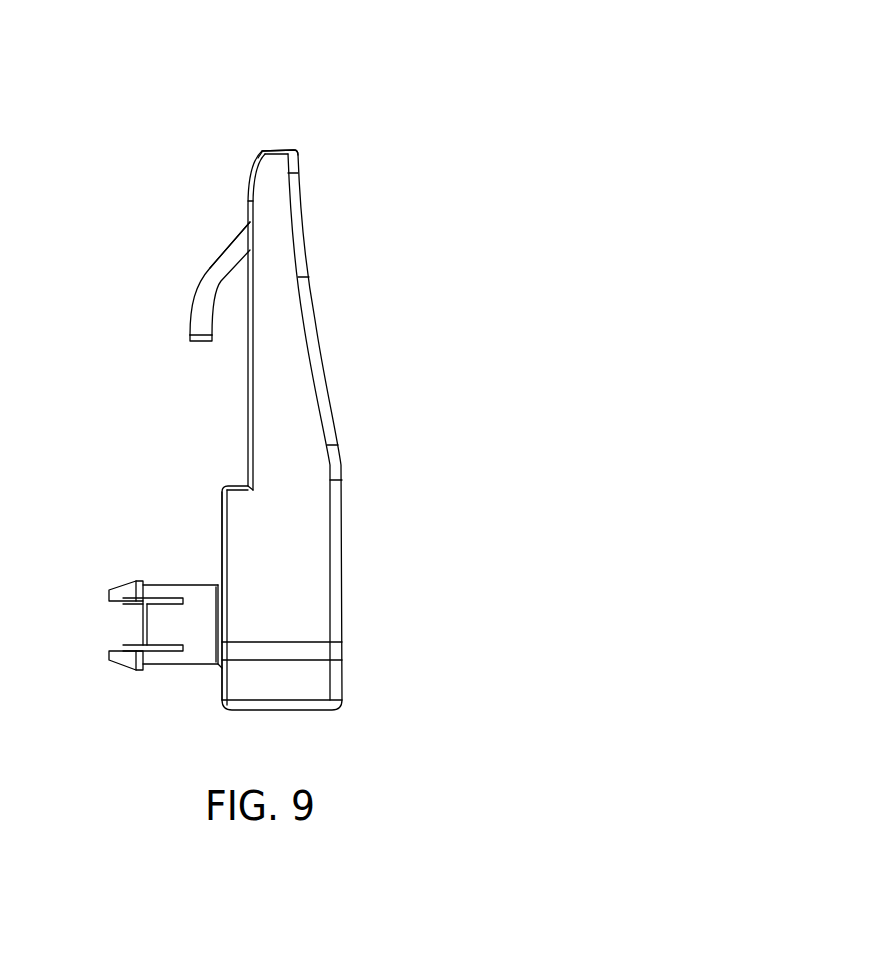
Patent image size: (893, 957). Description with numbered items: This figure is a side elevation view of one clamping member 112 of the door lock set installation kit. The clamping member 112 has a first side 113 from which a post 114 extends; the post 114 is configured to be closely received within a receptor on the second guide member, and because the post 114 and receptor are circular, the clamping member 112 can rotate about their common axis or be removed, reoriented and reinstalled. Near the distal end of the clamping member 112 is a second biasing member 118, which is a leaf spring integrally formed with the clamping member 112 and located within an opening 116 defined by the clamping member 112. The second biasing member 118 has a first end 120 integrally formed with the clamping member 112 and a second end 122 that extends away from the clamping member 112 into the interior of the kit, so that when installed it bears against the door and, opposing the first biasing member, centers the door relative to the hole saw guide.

The clamping member 112 is at (418, 80).
The first side 113 is at (222, 505).
The post 114 is at (180, 670).
The opening 116 is at (276, 150).
The second biasing member 118 is at (211, 268).
The first end 120 is at (233, 240).
The second end 122 is at (197, 341).